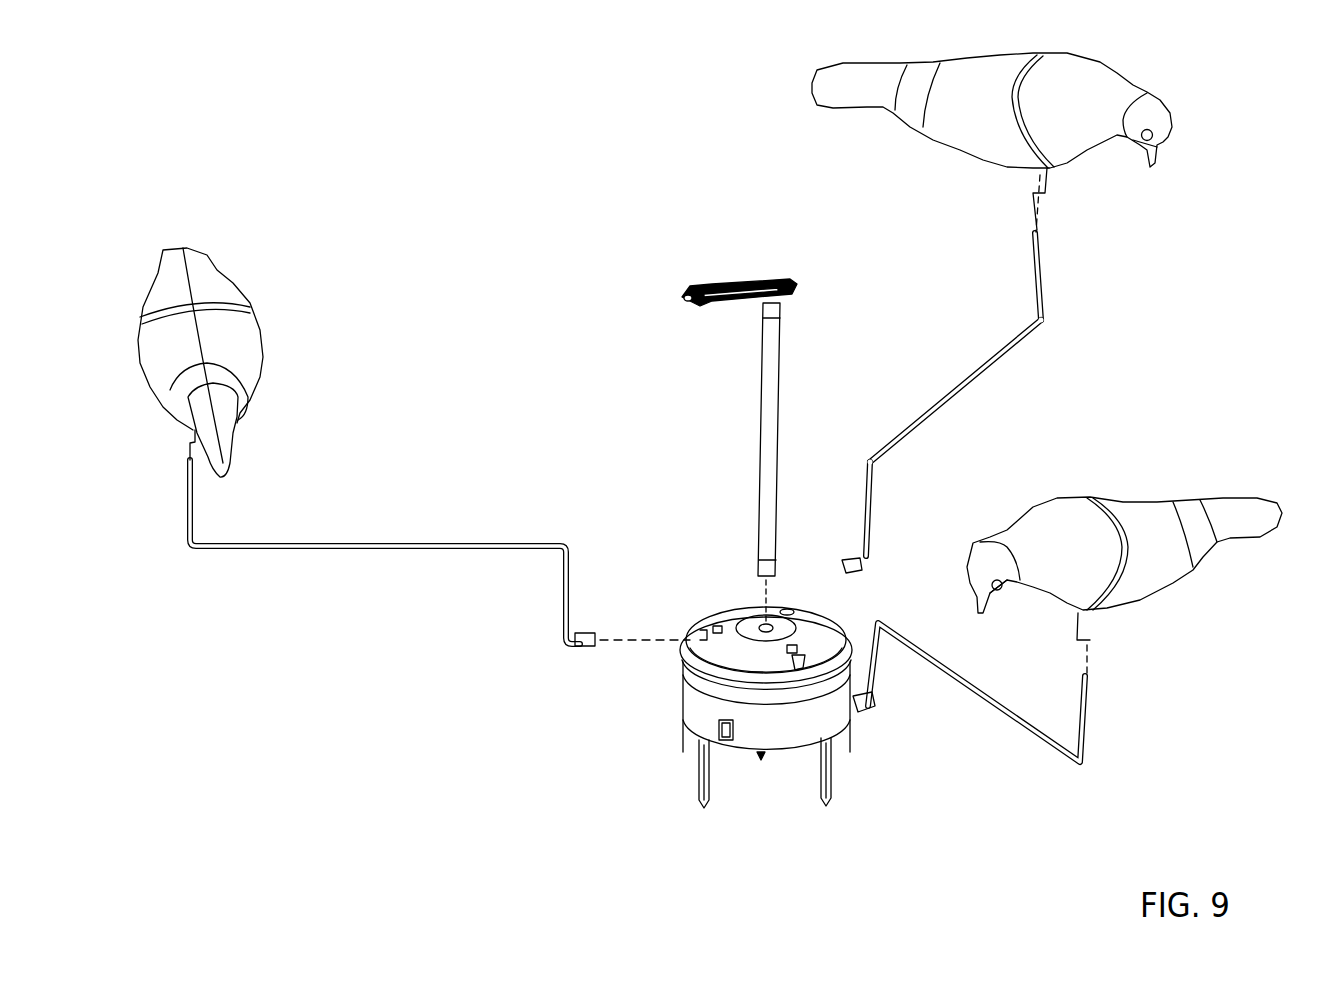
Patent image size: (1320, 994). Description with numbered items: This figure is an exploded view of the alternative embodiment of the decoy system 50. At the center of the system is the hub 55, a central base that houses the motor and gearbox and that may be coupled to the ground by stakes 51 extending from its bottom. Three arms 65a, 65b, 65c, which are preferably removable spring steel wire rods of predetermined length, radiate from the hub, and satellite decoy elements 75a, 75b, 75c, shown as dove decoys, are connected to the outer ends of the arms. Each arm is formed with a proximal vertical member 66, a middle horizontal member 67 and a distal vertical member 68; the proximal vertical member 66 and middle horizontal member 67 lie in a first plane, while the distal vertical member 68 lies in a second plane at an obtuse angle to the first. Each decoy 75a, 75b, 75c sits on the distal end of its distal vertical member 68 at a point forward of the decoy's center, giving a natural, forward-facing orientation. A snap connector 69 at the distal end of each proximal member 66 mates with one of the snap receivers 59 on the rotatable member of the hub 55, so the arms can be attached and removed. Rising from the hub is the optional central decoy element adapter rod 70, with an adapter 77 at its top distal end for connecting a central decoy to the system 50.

The decoy system 50 is at (472, 90).
The stakes 51 is at (702, 805).
The hub 55 is at (538, 787).
The snap receivers 59 is at (700, 625).
The arm 65a is at (992, 710).
The arm 65b is at (352, 548).
The arm 65c is at (987, 383).
The proximal vertical member 66 is at (873, 508).
The middle horizontal member 67 is at (955, 390).
The distal vertical member 68 is at (1043, 284).
The snap connector 69 is at (592, 636).
The central decoy element adapter rod 70 is at (603, 400).
The satellite decoy element 75a is at (1157, 623).
The satellite decoy element 75b is at (270, 292).
The satellite decoy element 75c is at (1168, 167).
The adapter 77 is at (745, 287).